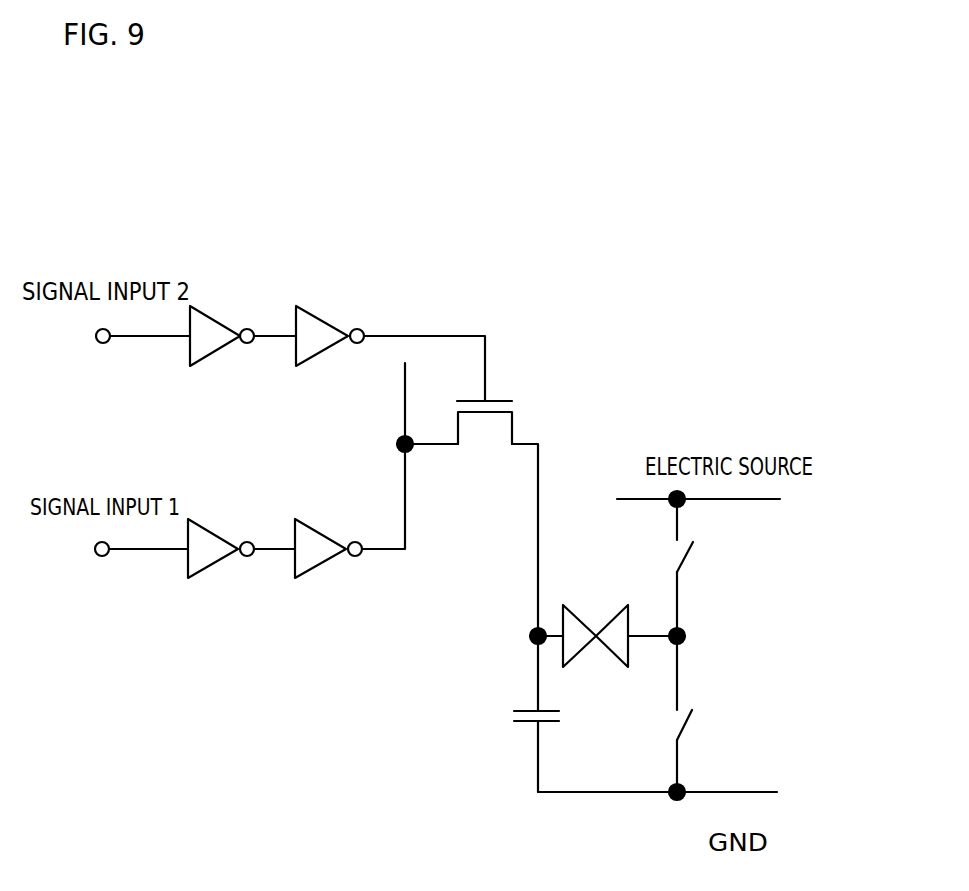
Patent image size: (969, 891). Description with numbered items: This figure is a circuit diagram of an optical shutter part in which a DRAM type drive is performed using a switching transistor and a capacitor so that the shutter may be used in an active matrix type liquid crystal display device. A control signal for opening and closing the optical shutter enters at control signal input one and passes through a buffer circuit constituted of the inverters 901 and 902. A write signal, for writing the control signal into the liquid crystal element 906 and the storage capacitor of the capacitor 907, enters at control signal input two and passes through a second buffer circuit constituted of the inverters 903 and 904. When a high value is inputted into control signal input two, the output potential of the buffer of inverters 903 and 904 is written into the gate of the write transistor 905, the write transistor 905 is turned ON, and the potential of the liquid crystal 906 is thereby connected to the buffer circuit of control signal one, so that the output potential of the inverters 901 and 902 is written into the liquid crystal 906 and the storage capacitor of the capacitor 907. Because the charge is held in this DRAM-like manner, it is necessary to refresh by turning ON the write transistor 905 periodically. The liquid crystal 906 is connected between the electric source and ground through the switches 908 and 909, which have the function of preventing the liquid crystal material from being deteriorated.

The inverter 901 is at (210, 532).
The inverter 902 is at (315, 535).
The inverter 903 is at (210, 320).
The inverter 904 is at (315, 322).
The write transistor 905 is at (517, 385).
The liquid crystal element 906 is at (615, 622).
The capacitor 907 is at (512, 728).
The switch 908 is at (687, 567).
The switch 909 is at (693, 728).